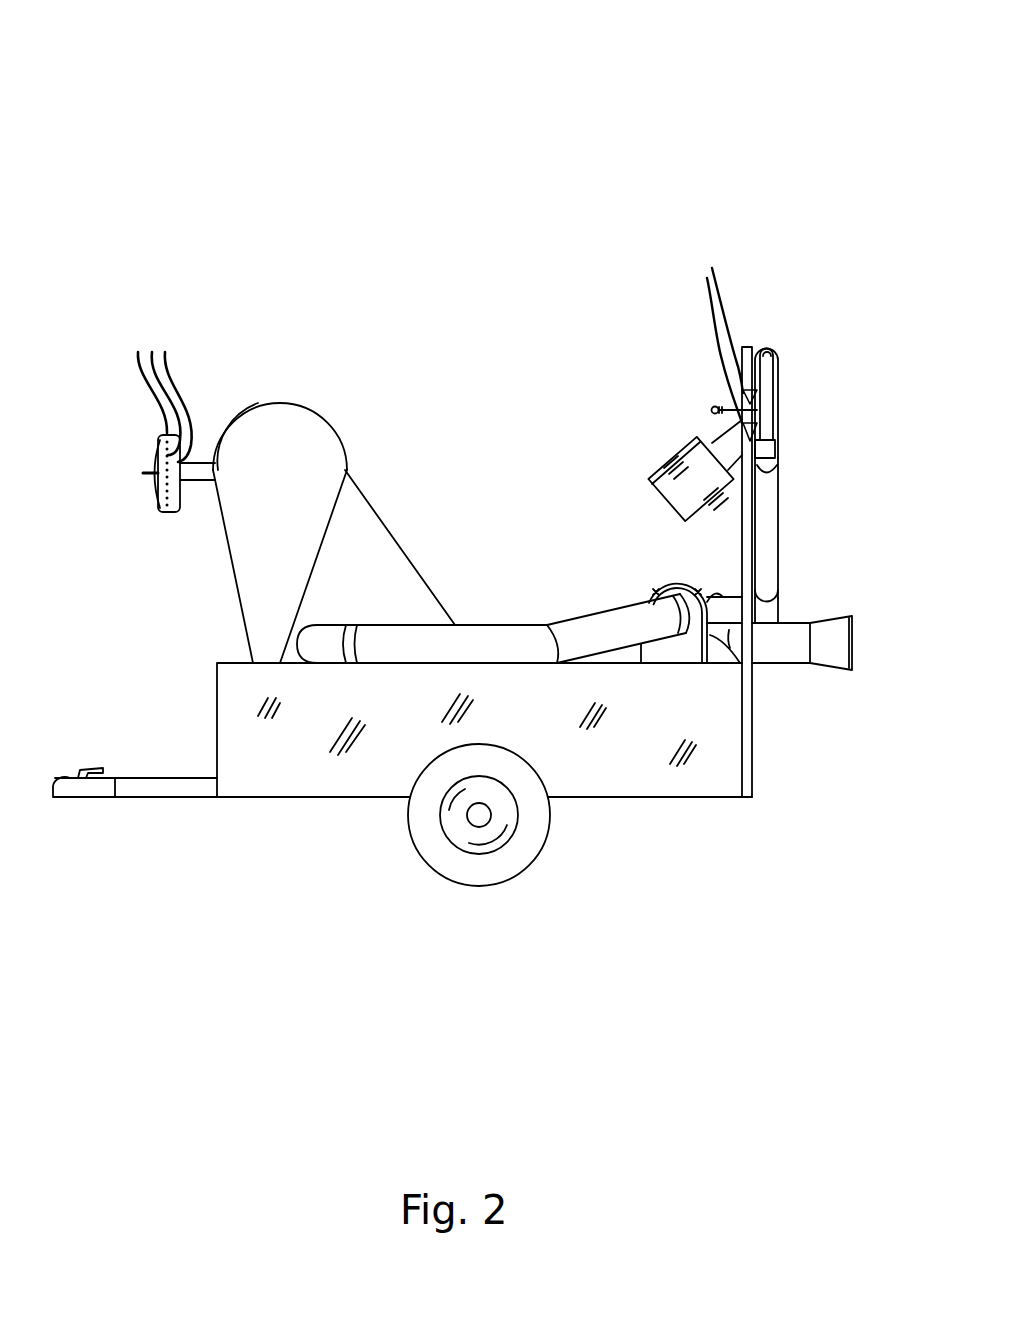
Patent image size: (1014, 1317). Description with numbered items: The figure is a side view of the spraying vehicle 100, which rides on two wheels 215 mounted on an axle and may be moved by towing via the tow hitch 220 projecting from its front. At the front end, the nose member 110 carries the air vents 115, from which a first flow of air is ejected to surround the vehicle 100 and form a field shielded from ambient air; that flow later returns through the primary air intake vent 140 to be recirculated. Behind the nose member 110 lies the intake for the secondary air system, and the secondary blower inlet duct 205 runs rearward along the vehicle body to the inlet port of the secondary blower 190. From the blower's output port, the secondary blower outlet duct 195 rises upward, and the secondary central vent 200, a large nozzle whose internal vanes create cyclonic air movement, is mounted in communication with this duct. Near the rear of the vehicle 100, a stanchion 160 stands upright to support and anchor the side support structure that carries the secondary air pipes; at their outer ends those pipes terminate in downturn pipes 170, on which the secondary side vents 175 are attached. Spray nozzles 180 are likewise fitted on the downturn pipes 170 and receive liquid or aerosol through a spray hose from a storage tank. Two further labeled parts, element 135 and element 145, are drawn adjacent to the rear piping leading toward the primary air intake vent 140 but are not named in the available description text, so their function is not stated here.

The vehicle 100 is at (182, 185).
The nose member 110 is at (156, 482).
The air vents 115 is at (162, 389).
The pipe 135 is at (792, 638).
The primary air intake vent 140 is at (853, 643).
The outlet pipe 145 is at (827, 650).
The stanchions 160 is at (747, 748).
The downturn pipes 170 is at (763, 400).
The secondary side vents 175 is at (706, 346).
The spray nozzles 180 is at (703, 408).
The secondary blower 190 is at (668, 588).
The secondary blower outlet duct 195 is at (760, 528).
The secondary central vent 200 is at (688, 482).
The secondary blower inlet duct 205 is at (588, 630).
The wheels 215 is at (432, 847).
The tow hitch 220 is at (65, 790).